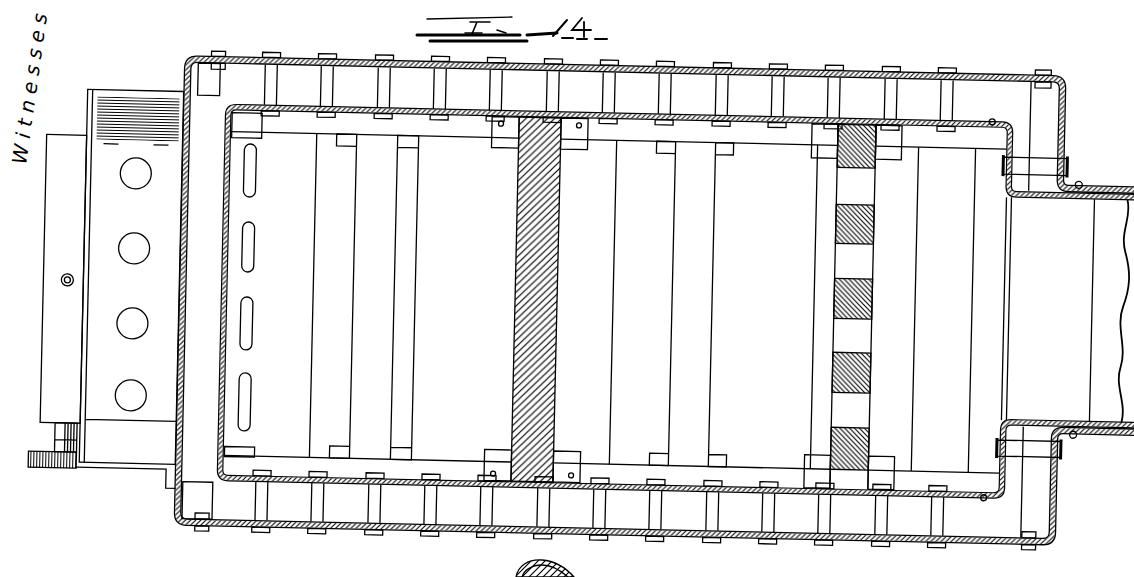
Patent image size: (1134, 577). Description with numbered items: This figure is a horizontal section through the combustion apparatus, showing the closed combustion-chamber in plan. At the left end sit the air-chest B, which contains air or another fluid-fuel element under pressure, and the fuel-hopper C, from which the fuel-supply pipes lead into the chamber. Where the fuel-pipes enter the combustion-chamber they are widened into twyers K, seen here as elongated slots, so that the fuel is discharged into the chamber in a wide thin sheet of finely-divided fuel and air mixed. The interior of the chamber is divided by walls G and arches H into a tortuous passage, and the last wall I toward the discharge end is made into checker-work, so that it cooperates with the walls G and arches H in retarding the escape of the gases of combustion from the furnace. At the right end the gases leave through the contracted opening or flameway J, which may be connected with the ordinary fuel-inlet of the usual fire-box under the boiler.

The air-chest B is at (0, 384).
The fuel-hopper C is at (130, 288).
The walls G is at (380, 297).
The arches H is at (552, 284).
The last wall I is at (857, 316).
The contracted opening or flameway J is at (1065, 310).
The twyers K is at (253, 240).